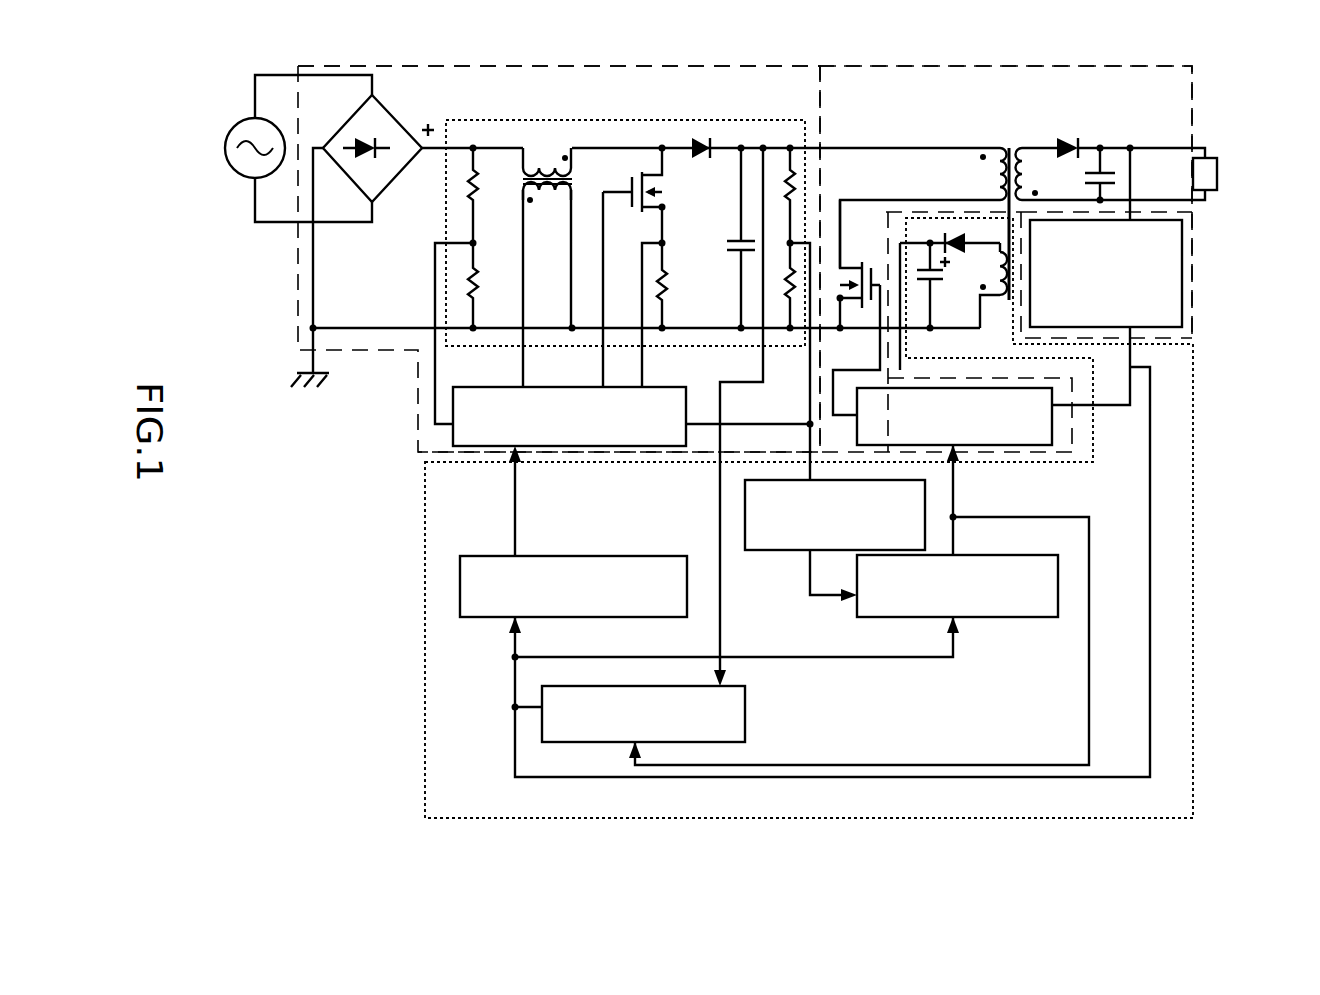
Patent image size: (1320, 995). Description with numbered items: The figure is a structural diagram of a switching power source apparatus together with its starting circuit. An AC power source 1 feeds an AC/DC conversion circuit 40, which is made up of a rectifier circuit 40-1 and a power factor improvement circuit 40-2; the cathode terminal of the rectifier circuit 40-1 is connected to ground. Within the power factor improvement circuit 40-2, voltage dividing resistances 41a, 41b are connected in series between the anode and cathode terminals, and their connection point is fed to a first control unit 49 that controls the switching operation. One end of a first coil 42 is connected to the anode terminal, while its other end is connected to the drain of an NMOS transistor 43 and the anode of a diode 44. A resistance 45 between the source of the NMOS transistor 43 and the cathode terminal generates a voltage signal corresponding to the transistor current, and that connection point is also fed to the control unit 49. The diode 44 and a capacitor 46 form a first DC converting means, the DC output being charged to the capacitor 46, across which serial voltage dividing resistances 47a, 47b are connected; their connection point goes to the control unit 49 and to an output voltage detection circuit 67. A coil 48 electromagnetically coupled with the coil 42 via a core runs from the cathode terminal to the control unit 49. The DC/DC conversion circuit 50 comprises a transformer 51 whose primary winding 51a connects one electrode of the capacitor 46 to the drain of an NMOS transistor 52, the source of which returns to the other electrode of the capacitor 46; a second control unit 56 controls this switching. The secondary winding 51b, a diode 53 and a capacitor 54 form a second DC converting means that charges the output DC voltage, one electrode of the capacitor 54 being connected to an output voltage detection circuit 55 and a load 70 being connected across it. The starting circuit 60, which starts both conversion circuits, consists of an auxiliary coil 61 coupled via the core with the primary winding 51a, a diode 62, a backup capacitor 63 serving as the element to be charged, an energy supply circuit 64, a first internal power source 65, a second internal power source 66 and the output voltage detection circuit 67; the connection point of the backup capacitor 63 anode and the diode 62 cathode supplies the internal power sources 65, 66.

The AC power source 1 is at (237, 132).
The AC/DC conversion circuit 40 is at (702, 66).
The rectifier circuit 40-1 is at (392, 108).
The power factor improvement circuit 40-2 is at (584, 74).
The voltage dividing resistance 41a is at (458, 208).
The voltage dividing resistance 41b is at (463, 283).
The first coil 42 is at (536, 166).
The NMOS transistor 43 is at (654, 172).
The diode 44 is at (700, 135).
The resistance 45 is at (668, 280).
The capacitor 46 is at (740, 246).
The voltage dividing resistance 47a is at (790, 172).
The voltage dividing resistance 47b is at (790, 312).
The coil 48 is at (553, 200).
The first control unit 49 is at (663, 447).
The DC/DC conversion circuit 50 is at (1016, 66).
The transformer 51 is at (1000, 148).
The primary winding 51a is at (990, 152).
The secondary winding 51b is at (1025, 165).
The NMOS transistor 52 is at (860, 268).
The diode 53 is at (1075, 135).
The capacitor 54 is at (1105, 173).
The output voltage detection circuit 55 is at (1182, 258).
The second control unit 56 is at (1053, 440).
The starting circuit 60 is at (912, 820).
The auxiliary coil 61 is at (1002, 298).
The diode 62 is at (958, 234).
The backup capacitor 63 is at (922, 263).
The energy supply circuit 64 is at (746, 722).
The first internal power source 65 is at (491, 618).
The second internal power source 66 is at (1034, 618).
The output voltage detection circuit 67 is at (787, 551).
The load 70 is at (1217, 160).